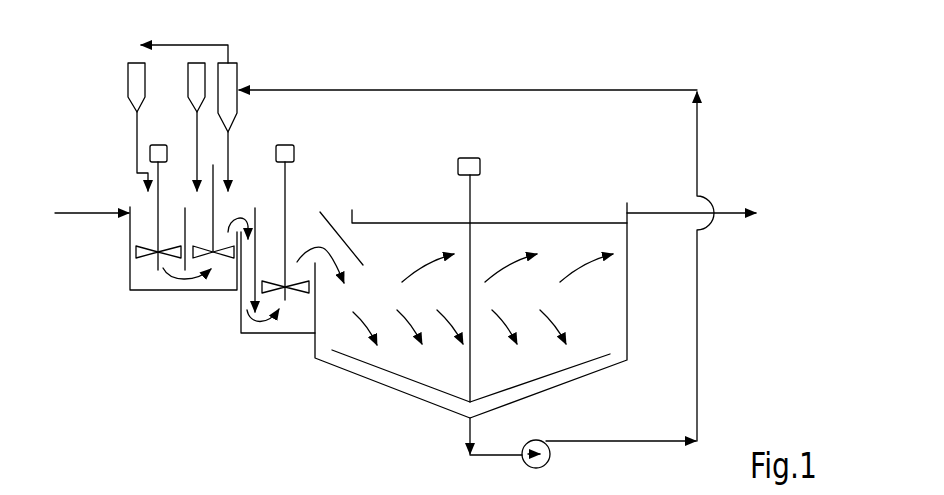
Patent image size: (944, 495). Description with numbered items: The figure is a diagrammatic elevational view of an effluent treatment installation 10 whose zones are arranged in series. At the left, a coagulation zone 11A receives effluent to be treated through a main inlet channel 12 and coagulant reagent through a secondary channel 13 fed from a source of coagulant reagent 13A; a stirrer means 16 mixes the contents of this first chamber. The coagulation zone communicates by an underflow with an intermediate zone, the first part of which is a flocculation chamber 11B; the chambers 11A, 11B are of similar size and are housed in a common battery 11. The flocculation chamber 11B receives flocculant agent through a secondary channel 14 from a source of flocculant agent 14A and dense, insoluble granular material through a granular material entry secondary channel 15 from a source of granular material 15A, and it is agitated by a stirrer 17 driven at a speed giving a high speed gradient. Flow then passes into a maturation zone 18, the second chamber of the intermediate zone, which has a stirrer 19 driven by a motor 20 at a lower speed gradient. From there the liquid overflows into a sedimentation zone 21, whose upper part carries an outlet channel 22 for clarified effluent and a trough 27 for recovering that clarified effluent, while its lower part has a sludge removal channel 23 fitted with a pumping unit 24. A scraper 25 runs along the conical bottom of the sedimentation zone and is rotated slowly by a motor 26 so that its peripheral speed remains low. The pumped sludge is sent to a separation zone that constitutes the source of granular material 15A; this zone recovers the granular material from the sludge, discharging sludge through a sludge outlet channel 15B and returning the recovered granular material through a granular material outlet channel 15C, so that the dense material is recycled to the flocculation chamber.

The effluent treatment installation 10 is at (730, 147).
The battery 11 is at (181, 294).
The coagulation zone 11A is at (138, 277).
The flocculation chamber 11B is at (228, 275).
The main inlet channel 12 is at (91, 212).
The secondary channel 13 is at (137, 128).
The source of coagulant reagent 13A is at (130, 62).
The secondary channel for flocculant agent 14 is at (197, 132).
The source of flocculant agent 14A is at (193, 64).
The granular material entry secondary channel 15 is at (230, 147).
The source of granular material 15A is at (238, 75).
The sludge outlet channel 15B is at (233, 62).
The granular material outlet channel 15C is at (238, 127).
The stirrer means 16 is at (158, 230).
The stirrer 17 is at (214, 203).
The maturation zone 18 is at (264, 339).
The stirrer 19 is at (303, 293).
The motor 20 is at (294, 152).
The sedimentation zone 21 is at (452, 294).
The outlet channel 22 is at (732, 218).
The sludge removal channel 23 is at (470, 428).
The pumping unit 24 is at (551, 458).
The scraper 25 is at (567, 367).
The motor 26 is at (470, 157).
The trough 27 is at (575, 223).